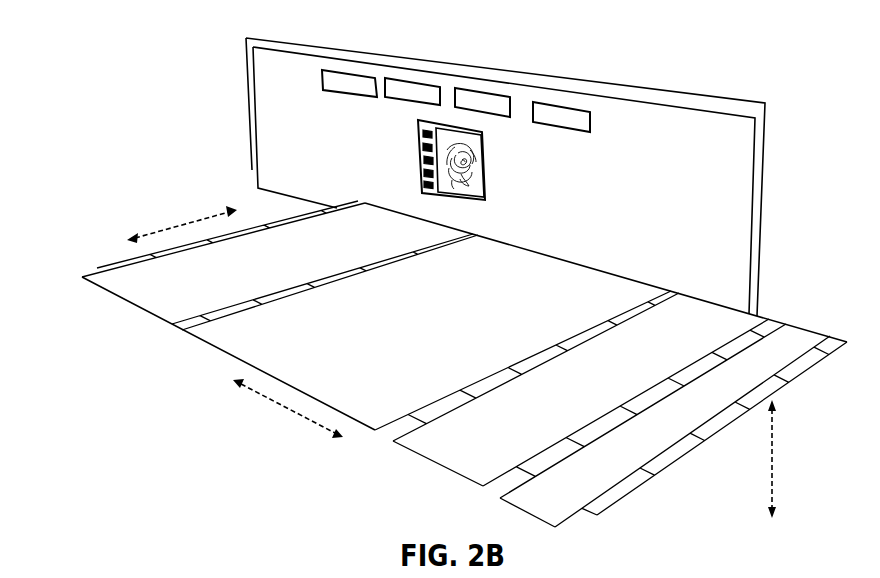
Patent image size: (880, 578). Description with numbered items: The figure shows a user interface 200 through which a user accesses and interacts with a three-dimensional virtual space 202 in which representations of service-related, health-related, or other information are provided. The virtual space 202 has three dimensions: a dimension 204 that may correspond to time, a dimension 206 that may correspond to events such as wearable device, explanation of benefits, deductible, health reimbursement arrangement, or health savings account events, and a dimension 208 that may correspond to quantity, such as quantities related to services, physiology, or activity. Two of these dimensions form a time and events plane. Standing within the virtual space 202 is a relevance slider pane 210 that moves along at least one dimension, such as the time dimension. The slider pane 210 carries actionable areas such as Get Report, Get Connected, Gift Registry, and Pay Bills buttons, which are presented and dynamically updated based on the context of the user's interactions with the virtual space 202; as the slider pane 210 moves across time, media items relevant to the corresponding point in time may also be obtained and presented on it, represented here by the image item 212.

The user interface 200 is at (752, 83).
The three-dimensional virtual space 202 is at (757, 320).
The dimension 204 is at (168, 228).
The dimension 206 is at (265, 397).
The dimension 208 is at (773, 470).
The relevance slider pane 210 is at (312, 55).
The image icon 212 is at (483, 190).